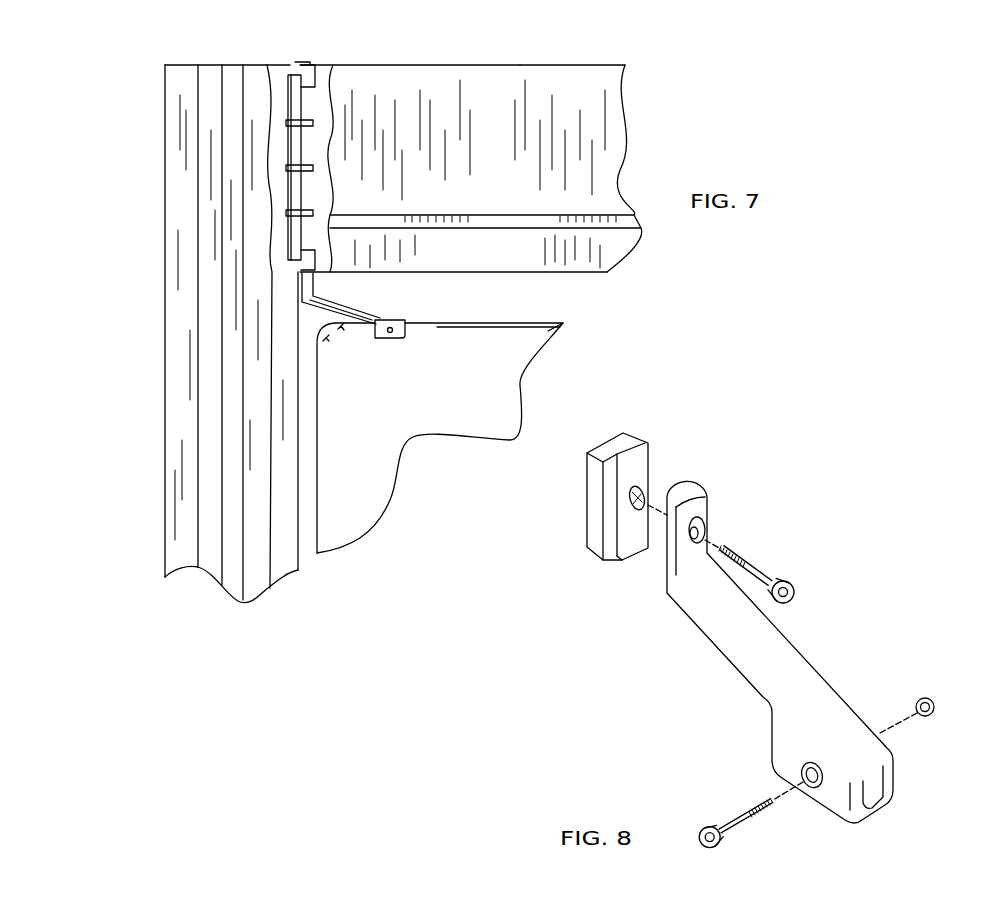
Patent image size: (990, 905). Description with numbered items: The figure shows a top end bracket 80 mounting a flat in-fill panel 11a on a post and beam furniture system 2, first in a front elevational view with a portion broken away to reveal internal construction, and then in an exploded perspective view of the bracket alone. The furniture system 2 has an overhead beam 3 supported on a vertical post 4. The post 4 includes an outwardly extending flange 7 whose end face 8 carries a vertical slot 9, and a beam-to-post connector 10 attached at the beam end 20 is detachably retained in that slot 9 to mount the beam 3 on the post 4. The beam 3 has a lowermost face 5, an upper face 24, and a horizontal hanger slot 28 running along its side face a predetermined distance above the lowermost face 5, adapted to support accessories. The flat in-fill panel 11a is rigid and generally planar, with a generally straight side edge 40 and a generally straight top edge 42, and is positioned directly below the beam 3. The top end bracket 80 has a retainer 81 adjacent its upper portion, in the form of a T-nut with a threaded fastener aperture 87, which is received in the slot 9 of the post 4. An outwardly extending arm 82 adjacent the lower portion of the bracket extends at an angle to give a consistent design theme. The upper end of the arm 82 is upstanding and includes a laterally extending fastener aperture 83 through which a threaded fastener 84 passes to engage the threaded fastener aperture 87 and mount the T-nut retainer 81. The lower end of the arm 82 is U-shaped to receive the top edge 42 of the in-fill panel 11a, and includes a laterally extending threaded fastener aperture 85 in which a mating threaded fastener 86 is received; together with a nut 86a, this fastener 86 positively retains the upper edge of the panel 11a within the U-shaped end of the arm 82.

In FIG. 7, the post and beam furniture system 2 is at (165, 80).
In FIG. 7, the overhead beam 3 is at (475, 82).
In FIG. 7, the vertical post 4 is at (270, 573).
In FIG. 7, the lowermost face 5 is at (588, 278).
In FIG. 7, the flange 7 is at (178, 404).
In FIG. 7, the end face 8 is at (185, 258).
In FIG. 7, the slot 9 is at (210, 303).
In FIG. 7, the beam-to-post connector 10 is at (300, 96).
In FIG. 7, the flat in-fill panel 11a is at (375, 502).
In FIG. 7, the beam end 20 is at (352, 75).
In FIG. 7, the upper face 24 is at (600, 65).
In FIG. 7, the hanger slot 28 is at (478, 222).
In FIG. 7, the side edge 40 is at (320, 458).
In FIG. 7, the top edge 42 is at (497, 326).
In FIG. 7, the top end bracket 80 is at (381, 342).
In FIG. 8, the top end bracket 80 is at (760, 672).
In FIG. 8, the retainer 81 is at (630, 440).
In FIG. 7, the arm 82 is at (352, 311).
In FIG. 8, the arm 82 is at (790, 655).
In FIG. 8, the fastener aperture 83 is at (705, 528).
In FIG. 8, the threaded fastener 84 is at (792, 582).
In FIG. 8, the threaded fastener aperture 85 is at (812, 792).
In FIG. 7, the threaded fastener 86 is at (393, 337).
In FIG. 8, the threaded fastener 86 is at (727, 812).
In FIG. 8, the nut 86a is at (930, 698).
In FIG. 8, the threaded fastener aperture 87 is at (637, 512).